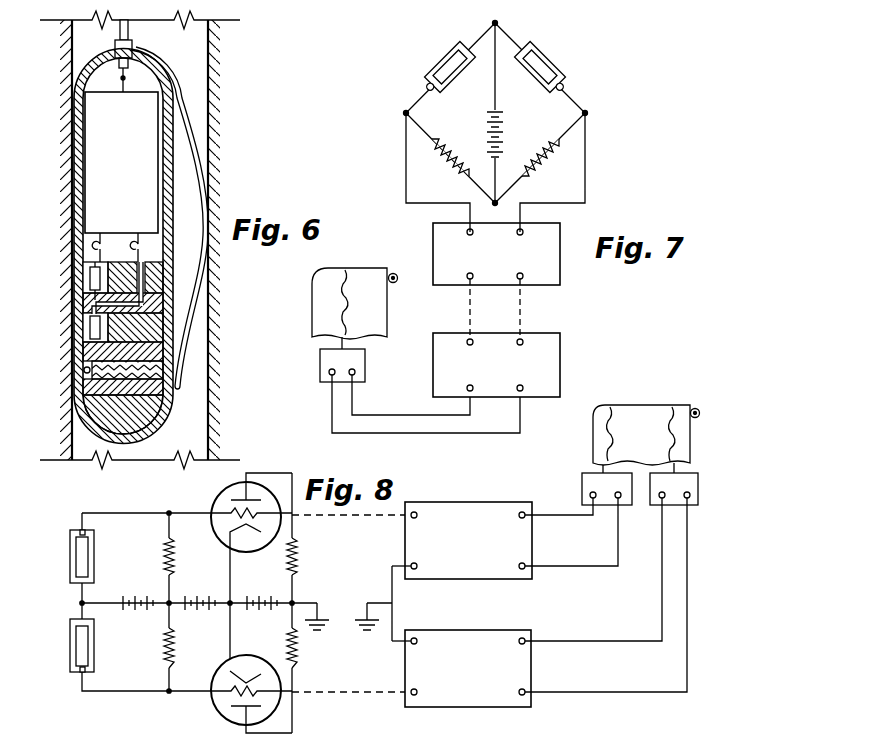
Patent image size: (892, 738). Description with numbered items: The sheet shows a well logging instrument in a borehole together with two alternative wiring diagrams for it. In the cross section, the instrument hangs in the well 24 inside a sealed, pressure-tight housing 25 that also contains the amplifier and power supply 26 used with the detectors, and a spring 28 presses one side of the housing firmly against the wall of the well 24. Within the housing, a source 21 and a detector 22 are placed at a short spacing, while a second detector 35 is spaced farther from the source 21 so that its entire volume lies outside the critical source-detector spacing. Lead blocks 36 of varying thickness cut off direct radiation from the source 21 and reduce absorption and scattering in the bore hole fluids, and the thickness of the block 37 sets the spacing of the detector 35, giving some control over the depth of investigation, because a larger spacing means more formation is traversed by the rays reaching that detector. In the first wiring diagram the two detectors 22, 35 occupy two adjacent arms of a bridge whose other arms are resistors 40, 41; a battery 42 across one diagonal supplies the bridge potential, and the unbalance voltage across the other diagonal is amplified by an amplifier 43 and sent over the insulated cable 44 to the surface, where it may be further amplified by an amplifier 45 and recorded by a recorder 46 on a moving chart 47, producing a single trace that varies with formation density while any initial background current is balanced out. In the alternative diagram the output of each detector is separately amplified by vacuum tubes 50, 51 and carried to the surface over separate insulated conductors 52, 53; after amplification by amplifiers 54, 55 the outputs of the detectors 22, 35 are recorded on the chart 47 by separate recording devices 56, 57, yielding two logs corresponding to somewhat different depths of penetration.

In FIG. 6, the source 21 is at (84, 371).
In FIG. 6, the detector 22 is at (90, 327).
In FIG. 7, the detector 22 is at (437, 60).
In FIG. 8, the detector 22 is at (70, 645).
In FIG. 6, the well 24 is at (211, 47).
In FIG. 6, the housing 25 is at (75, 57).
In FIG. 6, the amplifier and power supply 26 is at (86, 153).
In FIG. 6, the spring 28 is at (196, 160).
In FIG. 6, the second detector 35 is at (90, 277).
In FIG. 7, the second detector 35 is at (553, 60).
In FIG. 8, the second detector 35 is at (70, 557).
In FIG. 6, the lead blocks 36 is at (150, 424).
In FIG. 6, the block 37 is at (172, 305).
In FIG. 7, the resistor 40 is at (532, 170).
In FIG. 7, the resistor 41 is at (462, 172).
In FIG. 7, the battery 42 is at (514, 129).
In FIG. 8, the battery 42 is at (143, 611).
In FIG. 7, the amplifier 43 is at (432, 243).
In FIG. 7, the insulated cable 44 is at (514, 309).
In FIG. 7, the amplifier 45 is at (545, 333).
In FIG. 7, the recorder 46 is at (366, 364).
In FIG. 7, the moving chart 47 is at (388, 307).
In FIG. 8, the moving chart 47 is at (655, 404).
In FIG. 8, the vacuum tube 50 is at (213, 708).
In FIG. 8, the vacuum tube 51 is at (213, 497).
In FIG. 8, the insulated conductor 52 is at (338, 694).
In FIG. 8, the insulated conductor 53 is at (338, 518).
In FIG. 8, the amplifier 54 is at (468, 630).
In FIG. 8, the amplifier 55 is at (472, 580).
In FIG. 8, the recording device 56 is at (699, 492).
In FIG. 8, the recording device 57 is at (582, 493).